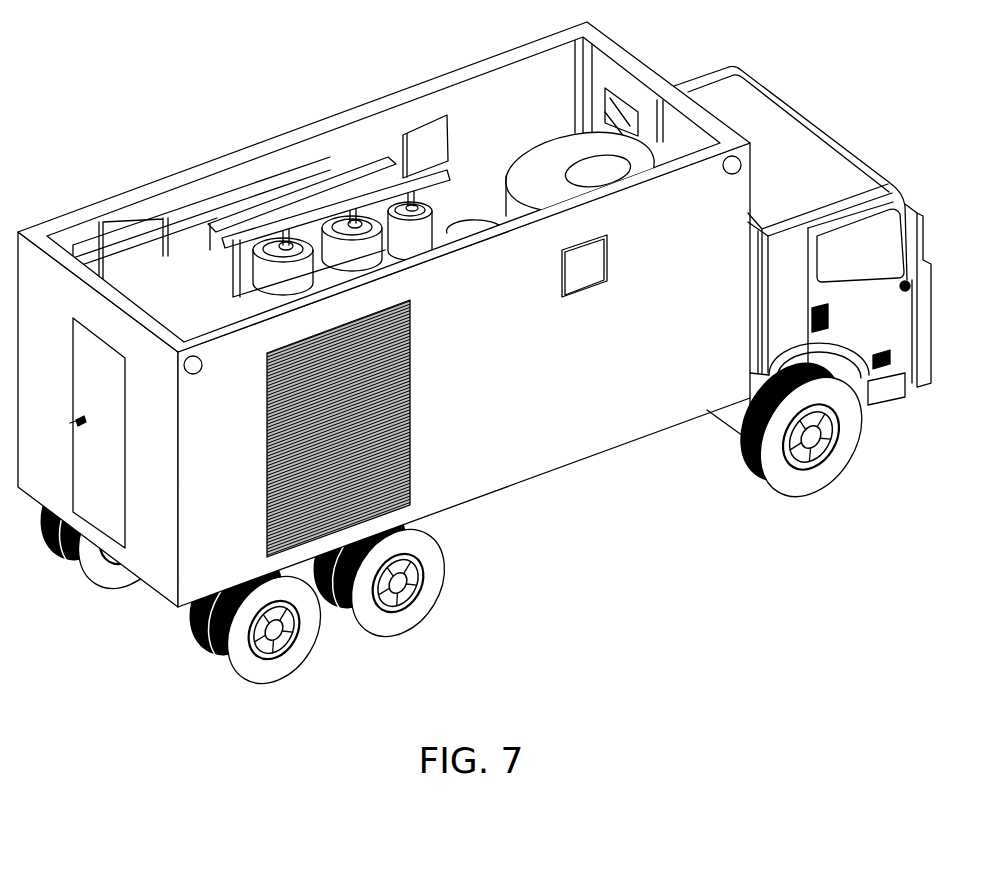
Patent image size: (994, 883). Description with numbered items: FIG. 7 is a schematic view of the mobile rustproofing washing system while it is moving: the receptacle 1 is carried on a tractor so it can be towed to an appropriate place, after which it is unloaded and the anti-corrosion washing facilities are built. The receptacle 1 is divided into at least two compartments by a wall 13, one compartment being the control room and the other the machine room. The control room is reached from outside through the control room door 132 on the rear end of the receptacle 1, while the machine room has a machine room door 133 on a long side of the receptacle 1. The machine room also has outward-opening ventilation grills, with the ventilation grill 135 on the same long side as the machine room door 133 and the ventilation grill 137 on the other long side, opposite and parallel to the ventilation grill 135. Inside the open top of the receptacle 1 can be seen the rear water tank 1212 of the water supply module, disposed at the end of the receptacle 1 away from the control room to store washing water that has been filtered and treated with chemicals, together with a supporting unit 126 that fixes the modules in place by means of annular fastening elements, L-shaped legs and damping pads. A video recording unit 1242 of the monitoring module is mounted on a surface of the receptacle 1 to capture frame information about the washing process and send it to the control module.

The receptacle 1 is at (528, 483).
The wall 13 is at (167, 256).
The supporting unit 126 is at (293, 193).
The control room door 132 is at (97, 492).
The machine room door 133 is at (413, 468).
The ventilation grill 135 is at (585, 296).
The ventilation grill 137 is at (420, 128).
The rear water tank 1212 is at (560, 153).
The video recording unit 1242 is at (193, 354).